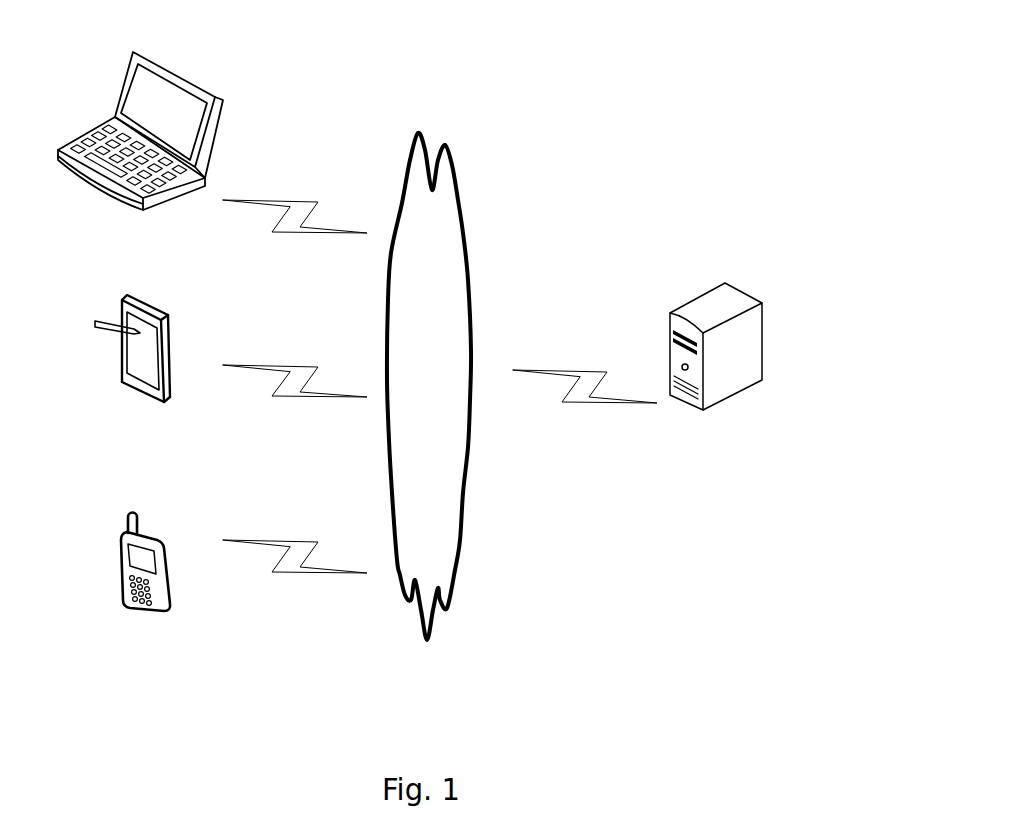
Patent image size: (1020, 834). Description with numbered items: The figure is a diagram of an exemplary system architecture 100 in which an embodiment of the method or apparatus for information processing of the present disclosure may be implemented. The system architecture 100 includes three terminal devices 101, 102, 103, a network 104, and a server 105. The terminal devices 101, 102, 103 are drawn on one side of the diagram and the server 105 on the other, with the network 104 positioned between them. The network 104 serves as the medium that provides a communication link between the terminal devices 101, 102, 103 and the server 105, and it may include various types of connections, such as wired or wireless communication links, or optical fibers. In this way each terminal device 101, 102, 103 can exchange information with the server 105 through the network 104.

The system architecture 100 is at (683, 43).
The terminal device 101 is at (145, 585).
The terminal device 102 is at (132, 368).
The terminal device 103 is at (140, 151).
The network 104 is at (429, 386).
The server 105 is at (716, 376).